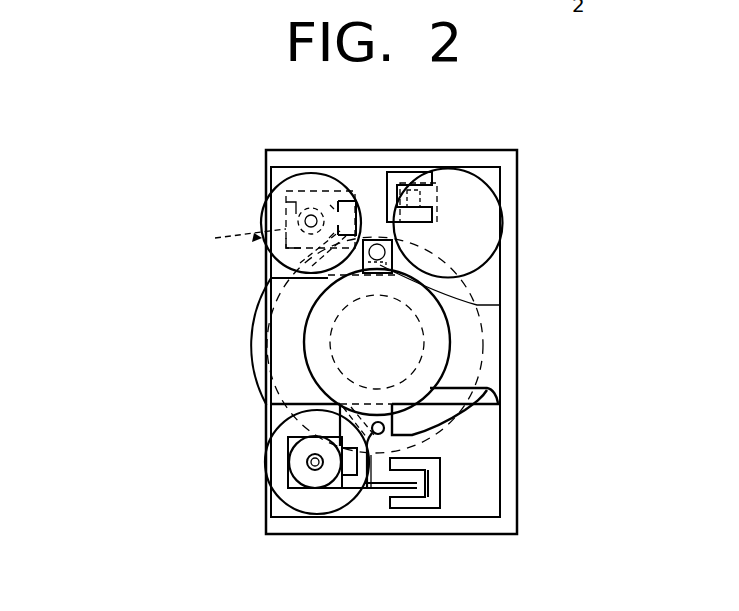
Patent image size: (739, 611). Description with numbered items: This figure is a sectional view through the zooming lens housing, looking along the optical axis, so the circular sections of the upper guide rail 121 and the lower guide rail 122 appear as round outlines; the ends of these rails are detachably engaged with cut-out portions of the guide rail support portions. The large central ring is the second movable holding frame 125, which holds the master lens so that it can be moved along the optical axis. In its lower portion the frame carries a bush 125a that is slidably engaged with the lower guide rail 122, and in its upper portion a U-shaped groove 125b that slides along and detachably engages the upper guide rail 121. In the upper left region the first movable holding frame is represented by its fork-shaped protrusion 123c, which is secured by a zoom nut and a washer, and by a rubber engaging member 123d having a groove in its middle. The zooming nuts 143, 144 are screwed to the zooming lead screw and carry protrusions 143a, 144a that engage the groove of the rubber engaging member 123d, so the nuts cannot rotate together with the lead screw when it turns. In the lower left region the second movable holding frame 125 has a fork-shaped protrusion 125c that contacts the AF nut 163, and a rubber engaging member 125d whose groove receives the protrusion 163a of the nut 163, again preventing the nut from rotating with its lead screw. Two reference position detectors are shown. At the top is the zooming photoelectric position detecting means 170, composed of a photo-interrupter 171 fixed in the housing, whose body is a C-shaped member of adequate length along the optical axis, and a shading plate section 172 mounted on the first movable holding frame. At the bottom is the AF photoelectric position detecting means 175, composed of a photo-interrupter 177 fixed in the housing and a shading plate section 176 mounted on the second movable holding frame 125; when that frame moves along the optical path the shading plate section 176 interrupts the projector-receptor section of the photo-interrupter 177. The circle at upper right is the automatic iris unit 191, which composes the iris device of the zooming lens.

The upper guide rail 121 is at (250, 325).
The lower guide rail 122 is at (447, 383).
The fork-shaped protrusion 123c is at (286, 200).
The rubber engaging member 123d is at (340, 198).
The second movable holding frame 125 is at (430, 347).
The bush 125a is at (385, 424).
The U-shaped groove 125b is at (395, 268).
The fork-shaped protrusion 125c is at (288, 446).
The rubber engaging member 125d is at (345, 490).
The zooming nut 143 is at (228, 223).
The zooming nut 144 is at (288, 223).
The protrusion 143a is at (220, 266).
The protrusion 144a is at (268, 267).
The AF nut 163 is at (300, 468).
The protrusion 163a is at (318, 487).
The zooming photoelectric position detecting means 170 is at (405, 160).
The photo-interrupter 171 is at (413, 172).
The shading plate section 172 is at (371, 185).
The AF photoelectric position detecting means 175 is at (448, 500).
The shading plate section 176 is at (407, 492).
The photo-interrupter 177 is at (442, 483).
The automatic iris unit 191 is at (475, 218).